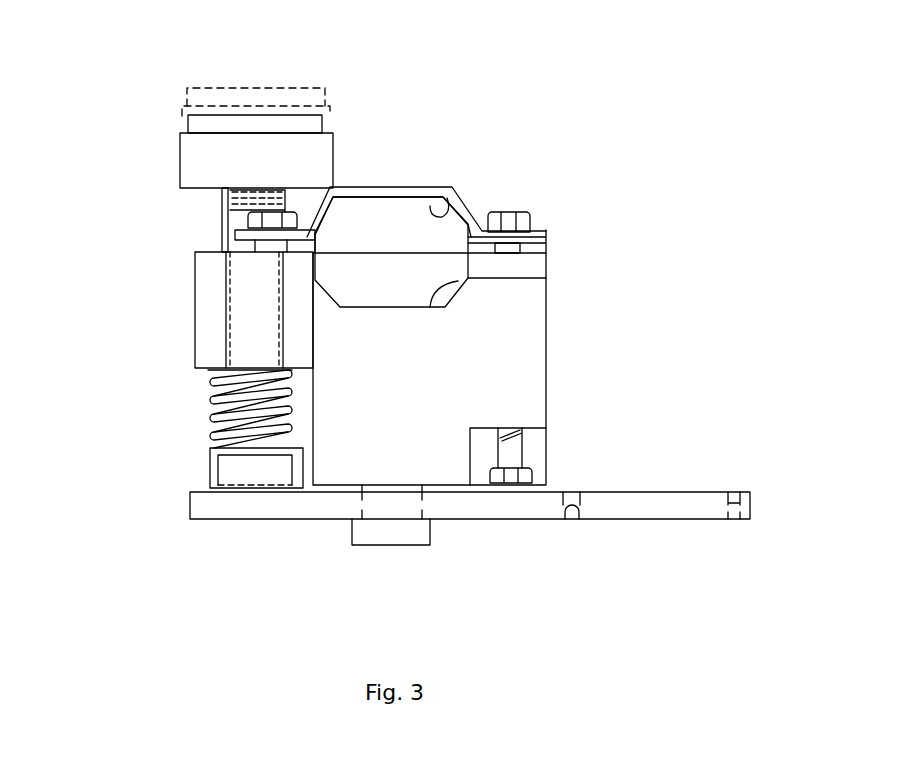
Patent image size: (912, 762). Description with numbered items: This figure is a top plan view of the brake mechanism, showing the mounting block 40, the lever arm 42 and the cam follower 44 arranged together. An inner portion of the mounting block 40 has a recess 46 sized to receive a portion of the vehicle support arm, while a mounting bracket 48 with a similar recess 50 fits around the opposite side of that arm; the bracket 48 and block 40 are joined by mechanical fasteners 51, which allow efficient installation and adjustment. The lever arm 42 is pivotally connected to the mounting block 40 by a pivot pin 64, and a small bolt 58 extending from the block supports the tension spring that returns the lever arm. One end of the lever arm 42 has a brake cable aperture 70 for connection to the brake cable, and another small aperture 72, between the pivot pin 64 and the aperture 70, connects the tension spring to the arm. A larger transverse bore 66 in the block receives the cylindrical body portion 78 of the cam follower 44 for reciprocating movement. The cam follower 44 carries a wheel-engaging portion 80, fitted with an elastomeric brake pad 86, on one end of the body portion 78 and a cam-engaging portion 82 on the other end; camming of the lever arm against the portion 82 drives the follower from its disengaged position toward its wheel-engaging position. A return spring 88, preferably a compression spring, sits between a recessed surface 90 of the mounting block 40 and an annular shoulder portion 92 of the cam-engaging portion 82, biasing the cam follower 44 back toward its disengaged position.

The mounting block 40 is at (546, 356).
The lever arm 42 is at (484, 492).
The cam follower 44 is at (228, 218).
The recess 46 is at (546, 278).
The mounting bracket 48 is at (462, 190).
The recess 50 is at (430, 196).
The mechanical fasteners 51 is at (290, 208).
The small bolt 58 is at (524, 456).
The pivot pin 64 is at (398, 545).
The transverse bore 66 is at (224, 340).
The brake cable aperture 70 is at (740, 497).
The small aperture 72 is at (573, 519).
The cylindrical body portion 78 is at (238, 292).
The wheel-engaging portion 80 is at (178, 152).
The cam-engaging portion 82 is at (212, 455).
The brake pad 86 is at (241, 121).
The return spring 88 is at (212, 418).
The recessed surface 90 is at (200, 378).
The annular shoulder portion 92 is at (212, 430).